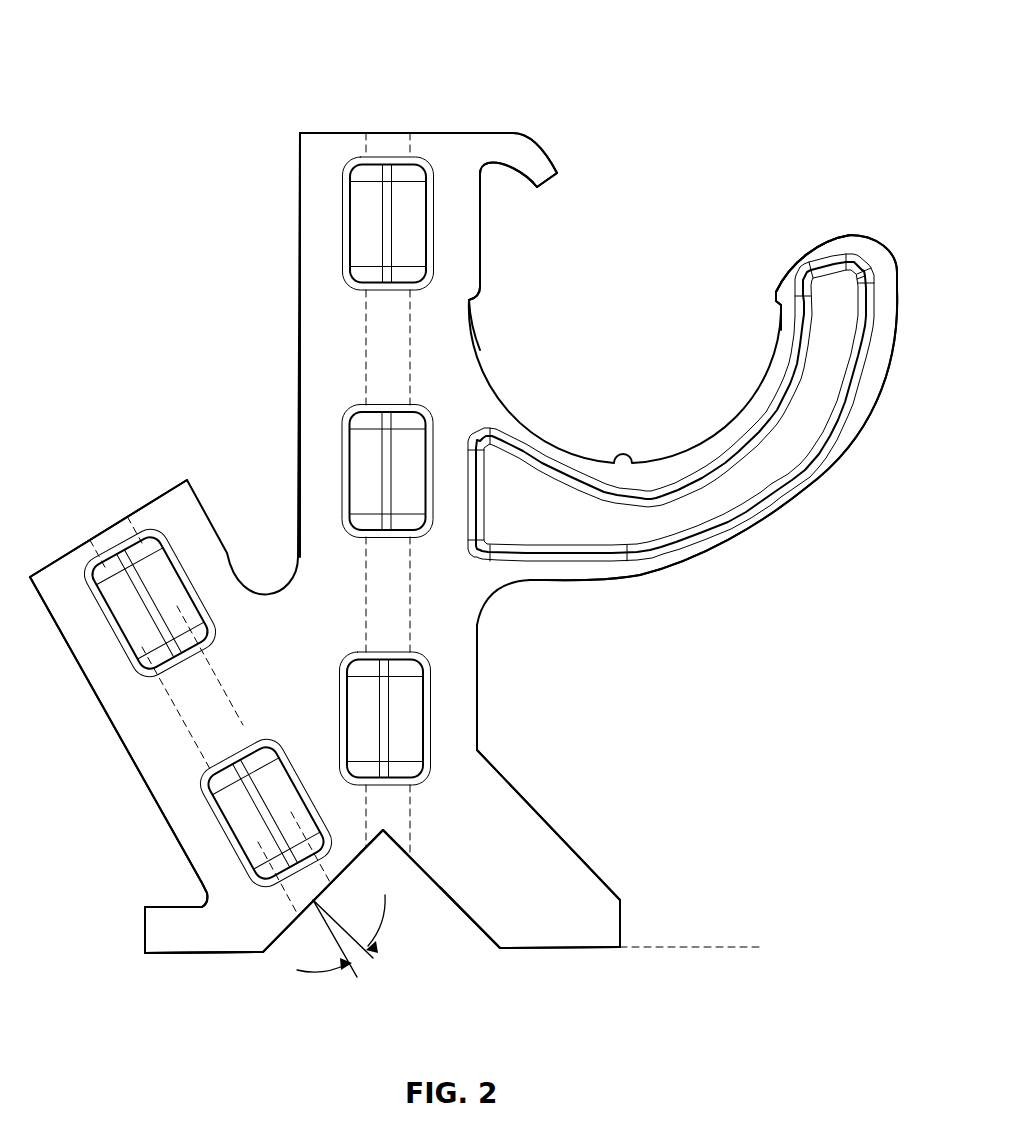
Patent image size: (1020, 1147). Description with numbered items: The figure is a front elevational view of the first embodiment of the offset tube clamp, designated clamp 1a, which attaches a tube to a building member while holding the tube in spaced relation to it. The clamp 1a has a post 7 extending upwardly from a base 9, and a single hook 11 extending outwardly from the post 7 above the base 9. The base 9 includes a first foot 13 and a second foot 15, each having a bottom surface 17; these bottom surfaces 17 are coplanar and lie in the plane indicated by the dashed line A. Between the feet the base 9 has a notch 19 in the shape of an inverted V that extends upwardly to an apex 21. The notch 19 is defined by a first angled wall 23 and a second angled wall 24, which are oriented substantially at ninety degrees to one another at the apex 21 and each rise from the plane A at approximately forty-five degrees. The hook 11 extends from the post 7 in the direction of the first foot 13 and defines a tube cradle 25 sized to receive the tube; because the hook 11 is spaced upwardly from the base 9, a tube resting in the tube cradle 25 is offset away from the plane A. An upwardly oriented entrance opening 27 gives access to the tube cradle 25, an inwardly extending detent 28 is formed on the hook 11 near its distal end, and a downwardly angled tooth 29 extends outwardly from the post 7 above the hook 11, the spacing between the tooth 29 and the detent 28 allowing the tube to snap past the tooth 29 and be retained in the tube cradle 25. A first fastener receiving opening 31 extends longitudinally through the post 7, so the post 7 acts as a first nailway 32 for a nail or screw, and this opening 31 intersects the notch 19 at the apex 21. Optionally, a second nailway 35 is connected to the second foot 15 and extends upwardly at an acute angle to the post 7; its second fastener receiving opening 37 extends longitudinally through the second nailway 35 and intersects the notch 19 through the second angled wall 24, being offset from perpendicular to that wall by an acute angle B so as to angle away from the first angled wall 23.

The clamp 1a is at (104, 48).
The post 7 is at (298, 283).
The base 9 is at (527, 801).
The hook 11 is at (752, 538).
The first foot 13 is at (622, 919).
The second foot 15 is at (144, 910).
The bottom surface 17 is at (560, 950).
The notch 19 is at (422, 872).
The apex 21 is at (385, 828).
The first angled wall 23 is at (480, 930).
The second angled wall 24 is at (283, 933).
The tube cradle 25 is at (700, 451).
The entrance opening 27 is at (546, 186).
The detent 28 is at (776, 289).
The tooth 29 is at (548, 150).
The first fastener receiving opening 31 is at (420, 355).
The first nailway 32 is at (298, 176).
The second nailway 35 is at (74, 662).
The second fastener receiving opening 37 is at (218, 681).
The plane A is at (704, 949).
The acute angle B is at (358, 958).